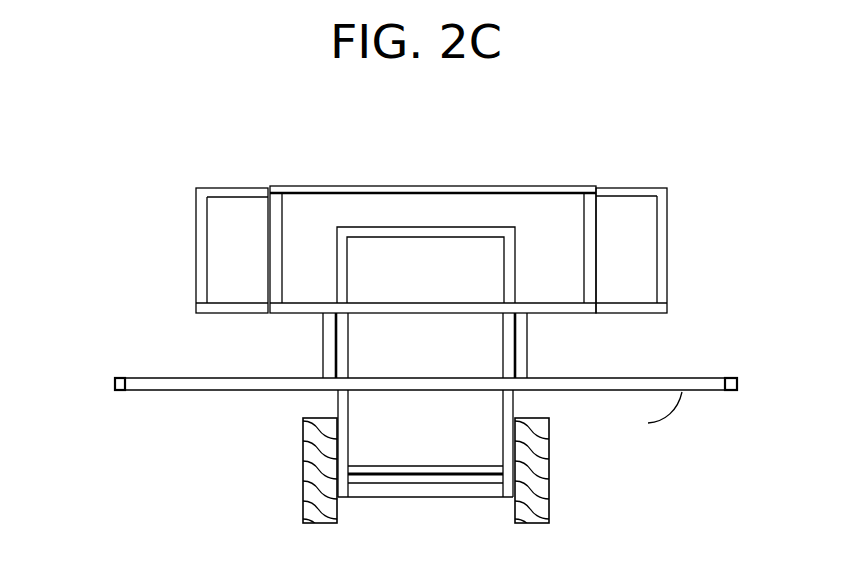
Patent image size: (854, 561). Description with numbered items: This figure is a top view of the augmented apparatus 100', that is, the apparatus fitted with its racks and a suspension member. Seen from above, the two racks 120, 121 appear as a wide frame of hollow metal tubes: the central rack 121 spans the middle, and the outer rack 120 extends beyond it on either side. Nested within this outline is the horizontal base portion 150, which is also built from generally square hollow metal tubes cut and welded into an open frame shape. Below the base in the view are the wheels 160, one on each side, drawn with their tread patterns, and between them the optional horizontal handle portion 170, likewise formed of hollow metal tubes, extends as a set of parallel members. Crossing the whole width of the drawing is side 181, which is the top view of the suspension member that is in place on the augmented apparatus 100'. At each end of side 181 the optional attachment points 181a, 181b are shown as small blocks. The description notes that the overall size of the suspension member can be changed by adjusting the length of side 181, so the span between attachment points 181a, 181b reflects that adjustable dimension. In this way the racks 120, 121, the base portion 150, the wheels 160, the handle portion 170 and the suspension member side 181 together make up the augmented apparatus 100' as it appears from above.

The augmented apparatus 100' is at (424, 343).
The rack 120 is at (630, 188).
The rack 121 is at (494, 186).
The horizontal base portion 150 is at (515, 272).
The wheels 160 is at (303, 455).
The horizontal handle portion 170 is at (503, 448).
The side 181 is at (455, 378).
The attachment point 181a is at (118, 392).
The attachment point 181b is at (731, 391).